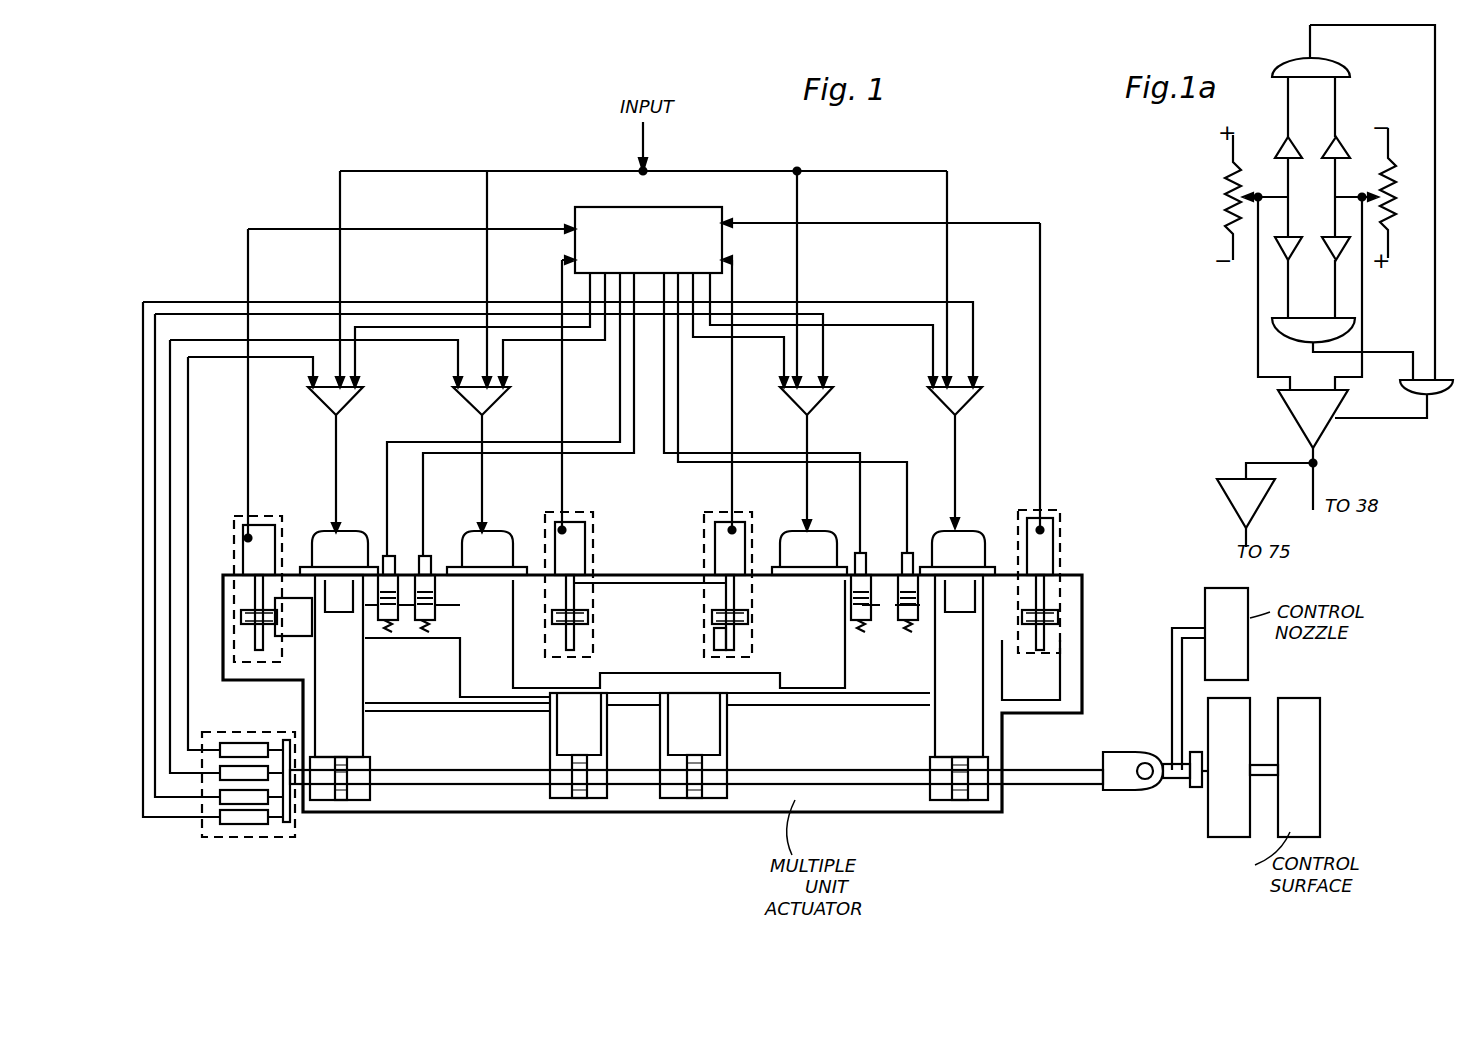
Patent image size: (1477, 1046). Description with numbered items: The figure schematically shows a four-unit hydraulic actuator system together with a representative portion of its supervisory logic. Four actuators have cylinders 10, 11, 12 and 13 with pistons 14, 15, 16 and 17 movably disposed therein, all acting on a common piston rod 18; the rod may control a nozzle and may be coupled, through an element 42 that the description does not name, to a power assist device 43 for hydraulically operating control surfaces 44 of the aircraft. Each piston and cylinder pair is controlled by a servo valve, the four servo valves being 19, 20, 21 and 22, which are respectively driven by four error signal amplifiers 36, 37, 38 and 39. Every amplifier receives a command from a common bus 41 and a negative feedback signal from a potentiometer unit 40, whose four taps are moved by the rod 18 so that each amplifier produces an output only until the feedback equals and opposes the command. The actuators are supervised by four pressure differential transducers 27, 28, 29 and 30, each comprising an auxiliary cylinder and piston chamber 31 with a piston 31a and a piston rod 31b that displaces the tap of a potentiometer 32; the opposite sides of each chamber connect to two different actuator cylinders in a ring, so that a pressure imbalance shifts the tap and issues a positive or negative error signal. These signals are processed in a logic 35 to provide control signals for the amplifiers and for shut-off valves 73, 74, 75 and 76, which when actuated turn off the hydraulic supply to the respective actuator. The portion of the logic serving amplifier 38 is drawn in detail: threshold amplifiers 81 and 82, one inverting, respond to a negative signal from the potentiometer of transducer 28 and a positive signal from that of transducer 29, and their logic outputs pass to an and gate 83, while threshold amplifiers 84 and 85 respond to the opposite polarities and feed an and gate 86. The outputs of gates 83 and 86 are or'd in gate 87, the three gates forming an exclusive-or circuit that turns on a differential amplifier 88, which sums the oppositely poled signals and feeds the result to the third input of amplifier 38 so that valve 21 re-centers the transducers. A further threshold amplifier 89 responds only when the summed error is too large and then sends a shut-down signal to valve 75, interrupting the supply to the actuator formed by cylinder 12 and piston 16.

In FIG. 1, the cylinder 10 is at (360, 772).
In FIG. 1, the cylinder 11 is at (595, 768).
In FIG. 1, the cylinder 12 is at (720, 768).
In FIG. 1, the cylinder 13 is at (985, 768).
In FIG. 1, the piston 14 is at (340, 800).
In FIG. 1, the piston 15 is at (578, 798).
In FIG. 1, the piston 16 is at (693, 798).
In FIG. 1, the piston 17 is at (958, 800).
In FIG. 1, the common piston rod 18 is at (1060, 770).
In FIG. 1, the servo valve 19 is at (345, 540).
In FIG. 1, the servo valve 20 is at (505, 540).
In FIG. 1, the servo valve 21 is at (830, 540).
In FIG. 1, the servo valve 22 is at (975, 540).
In FIG. 1, the signal transducer 27 is at (240, 500).
In FIG. 1, the signal transducer 28 is at (575, 510).
In FIG. 1A, the signal transducer 28 is at (1235, 205).
In FIG. 1, the signal transducer 29 is at (715, 510).
In FIG. 1A, the signal transducer 29 is at (1395, 190).
In FIG. 1, the signal transducer 30 is at (1030, 508).
In FIG. 1, the auxiliary cylinder and piston chamber 31 is at (712, 602).
In FIG. 1, the piston 31a is at (718, 618).
In FIG. 1, the piston rod 31b is at (700, 587).
In FIG. 1, the potentiometer 32 is at (262, 548).
In FIG. 1A, the potentiometer 32 is at (1303, 194).
In FIG. 1, the logic 35 is at (662, 250).
In FIG. 1, the error signal amplifier 36 is at (335, 403).
In FIG. 1, the error signal amplifier 37 is at (480, 401).
In FIG. 1, the error signal amplifier 38 is at (805, 398).
In FIG. 1, the error signal amplifier 39 is at (950, 397).
In FIG. 1, the potentiometer unit 40 is at (212, 838).
In FIG. 1, the common bus 41 is at (668, 171).
In FIG. 1, the coupling 42 is at (1192, 778).
In FIG. 1, the power assist device 43 is at (1245, 756).
In FIG. 1, the control surfaces 44 is at (1316, 756).
In FIG. 1, the valve 73 is at (393, 595).
In FIG. 1, the valve 74 is at (430, 595).
In FIG. 1, the valve 75 is at (862, 595).
In FIG. 1, the valve 76 is at (910, 595).
In FIG. 1A, the threshold amplifier 81 is at (1295, 250).
In FIG. 1A, the threshold amplifier 82 is at (1328, 252).
In FIG. 1A, the and gate 83 is at (1300, 330).
In FIG. 1A, the threshold amplifier 84 is at (1280, 148).
In FIG. 1A, the threshold amplifier 85 is at (1328, 150).
In FIG. 1A, the and gate 86 is at (1300, 58).
In FIG. 1A, the or gate 87 is at (1418, 390).
In FIG. 1A, the differential amplifier 88 is at (1305, 412).
In FIG. 1A, the threshold amplifier 89 is at (1240, 492).